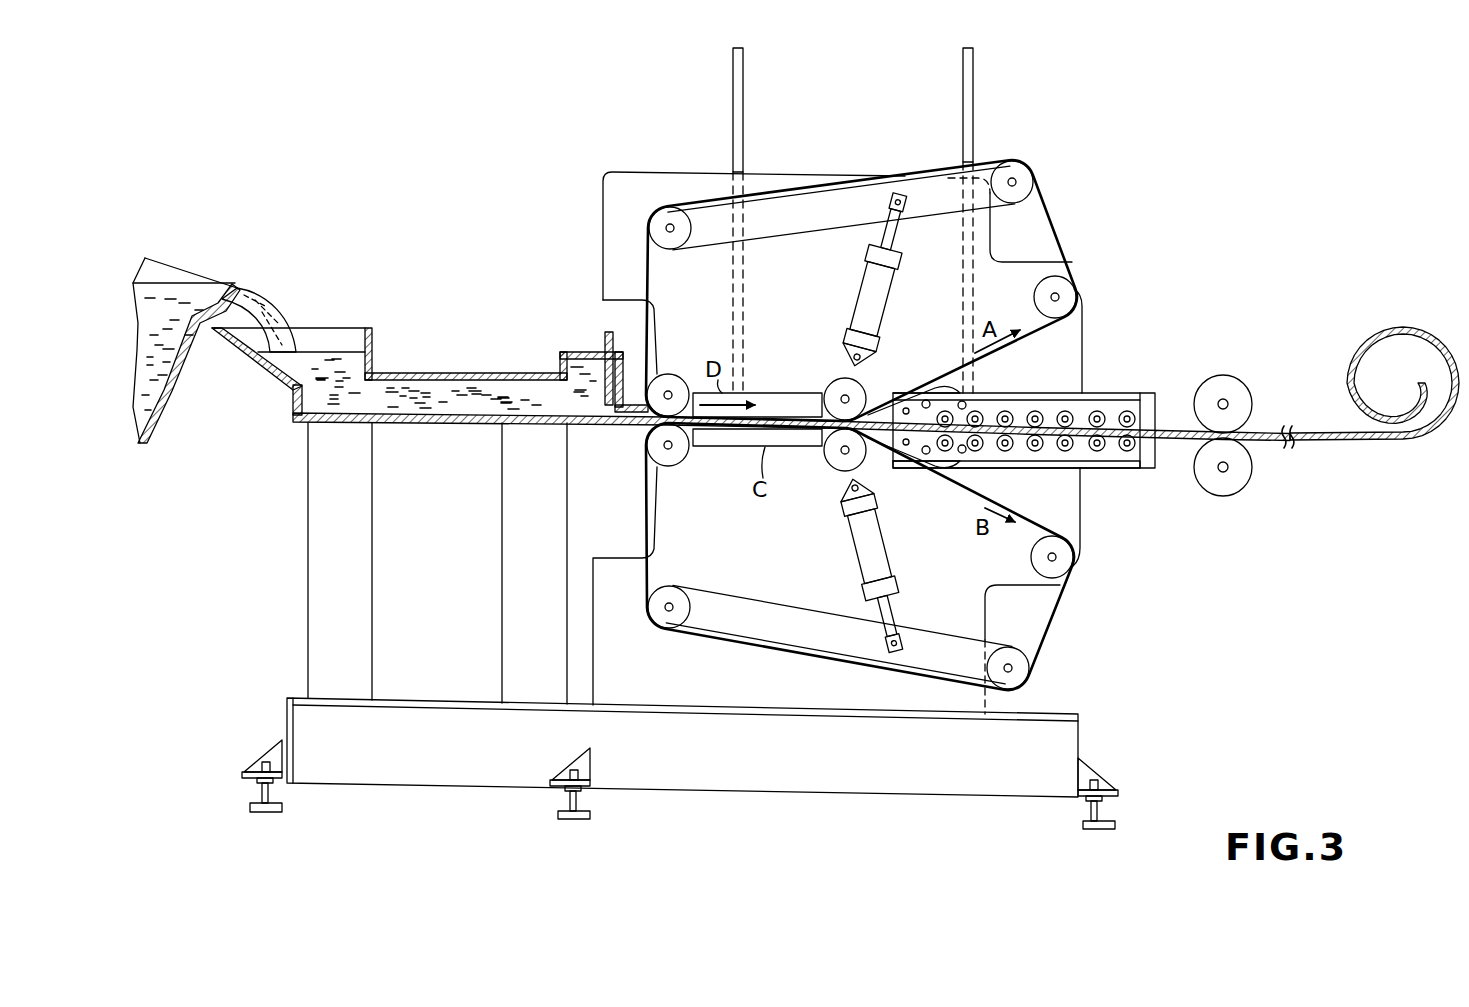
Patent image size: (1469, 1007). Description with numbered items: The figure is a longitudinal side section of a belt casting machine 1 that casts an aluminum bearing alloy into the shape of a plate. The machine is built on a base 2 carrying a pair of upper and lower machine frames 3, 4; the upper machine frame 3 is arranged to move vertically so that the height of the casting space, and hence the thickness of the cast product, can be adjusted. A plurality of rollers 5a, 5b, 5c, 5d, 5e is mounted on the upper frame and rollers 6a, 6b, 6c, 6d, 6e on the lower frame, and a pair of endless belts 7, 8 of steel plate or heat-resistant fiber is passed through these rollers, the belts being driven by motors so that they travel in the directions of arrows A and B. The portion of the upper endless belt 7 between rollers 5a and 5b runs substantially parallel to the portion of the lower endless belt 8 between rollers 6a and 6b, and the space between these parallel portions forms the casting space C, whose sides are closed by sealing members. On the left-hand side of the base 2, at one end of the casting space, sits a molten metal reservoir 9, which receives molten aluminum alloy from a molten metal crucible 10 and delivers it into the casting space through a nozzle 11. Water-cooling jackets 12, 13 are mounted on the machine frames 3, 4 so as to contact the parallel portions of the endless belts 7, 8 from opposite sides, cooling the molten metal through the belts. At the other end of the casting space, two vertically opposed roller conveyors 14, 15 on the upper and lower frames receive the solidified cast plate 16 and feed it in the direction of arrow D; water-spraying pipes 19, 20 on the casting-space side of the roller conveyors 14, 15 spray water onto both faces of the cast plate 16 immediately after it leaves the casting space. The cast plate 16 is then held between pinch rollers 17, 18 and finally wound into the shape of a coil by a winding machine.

The belt casting machine 1 is at (1060, 125).
The base 2 is at (1090, 736).
The upper machine frame 3 is at (642, 165).
The lower machine frame 4 is at (612, 556).
The roller 5a is at (687, 376).
The roller 5b is at (832, 381).
The roller 5c is at (1033, 297).
The roller 5d is at (1017, 204).
The roller 5e is at (679, 247).
The roller 6a is at (680, 464).
The roller 6b is at (865, 466).
The roller 6c is at (1030, 557).
The roller 6d is at (1012, 647).
The roller 6e is at (678, 586).
The upper endless belt 7 is at (955, 385).
The lower endless belt 8 is at (963, 490).
The molten metal reservoir 9 is at (436, 430).
The molten metal crucible 10 is at (172, 410).
The nozzle 11 is at (640, 430).
The water-cooling jacket 12 is at (768, 392).
The water-cooling jacket 13 is at (800, 447).
The roller conveyor 14 is at (1024, 428).
The roller conveyor 15 is at (1050, 470).
The cast plate 16 is at (1176, 442).
The pinch roller 17 is at (1240, 380).
The pinch roller 18 is at (1246, 488).
The water-spraying pipe 19 is at (978, 399).
The water-spraying pipe 20 is at (975, 456).